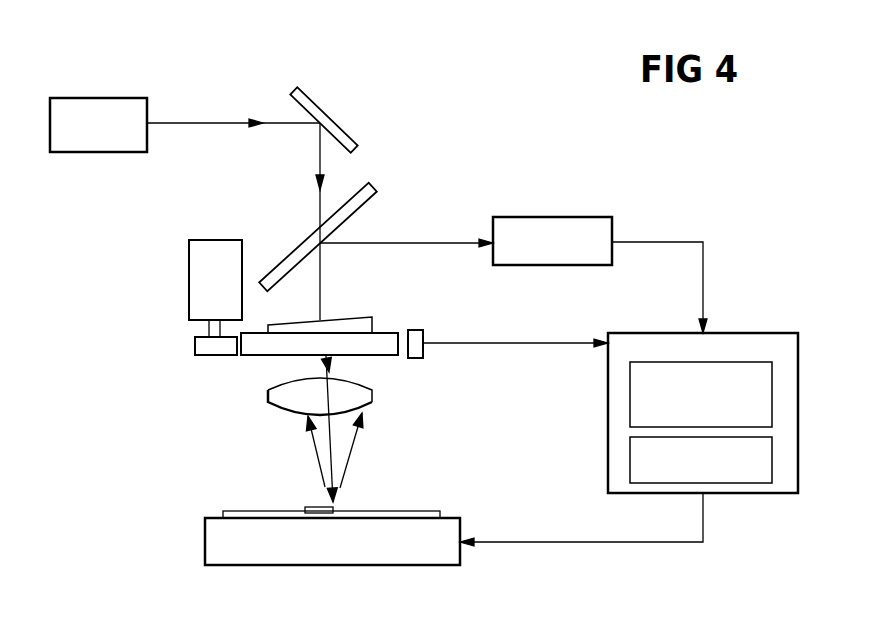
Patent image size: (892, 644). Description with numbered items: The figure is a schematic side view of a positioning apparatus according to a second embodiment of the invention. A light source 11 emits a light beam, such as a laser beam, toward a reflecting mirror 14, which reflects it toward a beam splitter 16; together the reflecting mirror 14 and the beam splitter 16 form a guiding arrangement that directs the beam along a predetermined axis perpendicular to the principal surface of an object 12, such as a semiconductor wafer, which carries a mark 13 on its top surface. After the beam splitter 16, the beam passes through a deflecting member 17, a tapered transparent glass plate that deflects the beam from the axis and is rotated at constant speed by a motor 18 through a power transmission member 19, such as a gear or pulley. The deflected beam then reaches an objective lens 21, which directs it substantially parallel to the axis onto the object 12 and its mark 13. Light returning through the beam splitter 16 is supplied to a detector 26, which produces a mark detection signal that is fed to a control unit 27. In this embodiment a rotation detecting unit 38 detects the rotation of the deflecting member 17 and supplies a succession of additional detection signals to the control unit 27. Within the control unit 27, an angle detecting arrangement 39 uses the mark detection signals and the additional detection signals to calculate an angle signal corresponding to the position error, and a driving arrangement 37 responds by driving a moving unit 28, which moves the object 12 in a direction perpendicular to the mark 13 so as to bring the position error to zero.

The light source 11 is at (62, 97).
The object 12 is at (407, 512).
The mark 13 is at (348, 510).
The reflecting mirror 14 is at (336, 123).
The beam splitter 16 is at (368, 190).
The deflecting member 17 is at (377, 333).
The motor 18 is at (189, 257).
The power transmission member 19 is at (195, 347).
The objective lens 21 is at (372, 392).
The detector 26 is at (570, 216).
The control unit 27 is at (680, 394).
The moving unit 28 is at (205, 545).
The driving arrangement 37 is at (630, 468).
The rotation detecting unit 38 is at (425, 335).
The angle detecting arrangement 39 is at (630, 413).